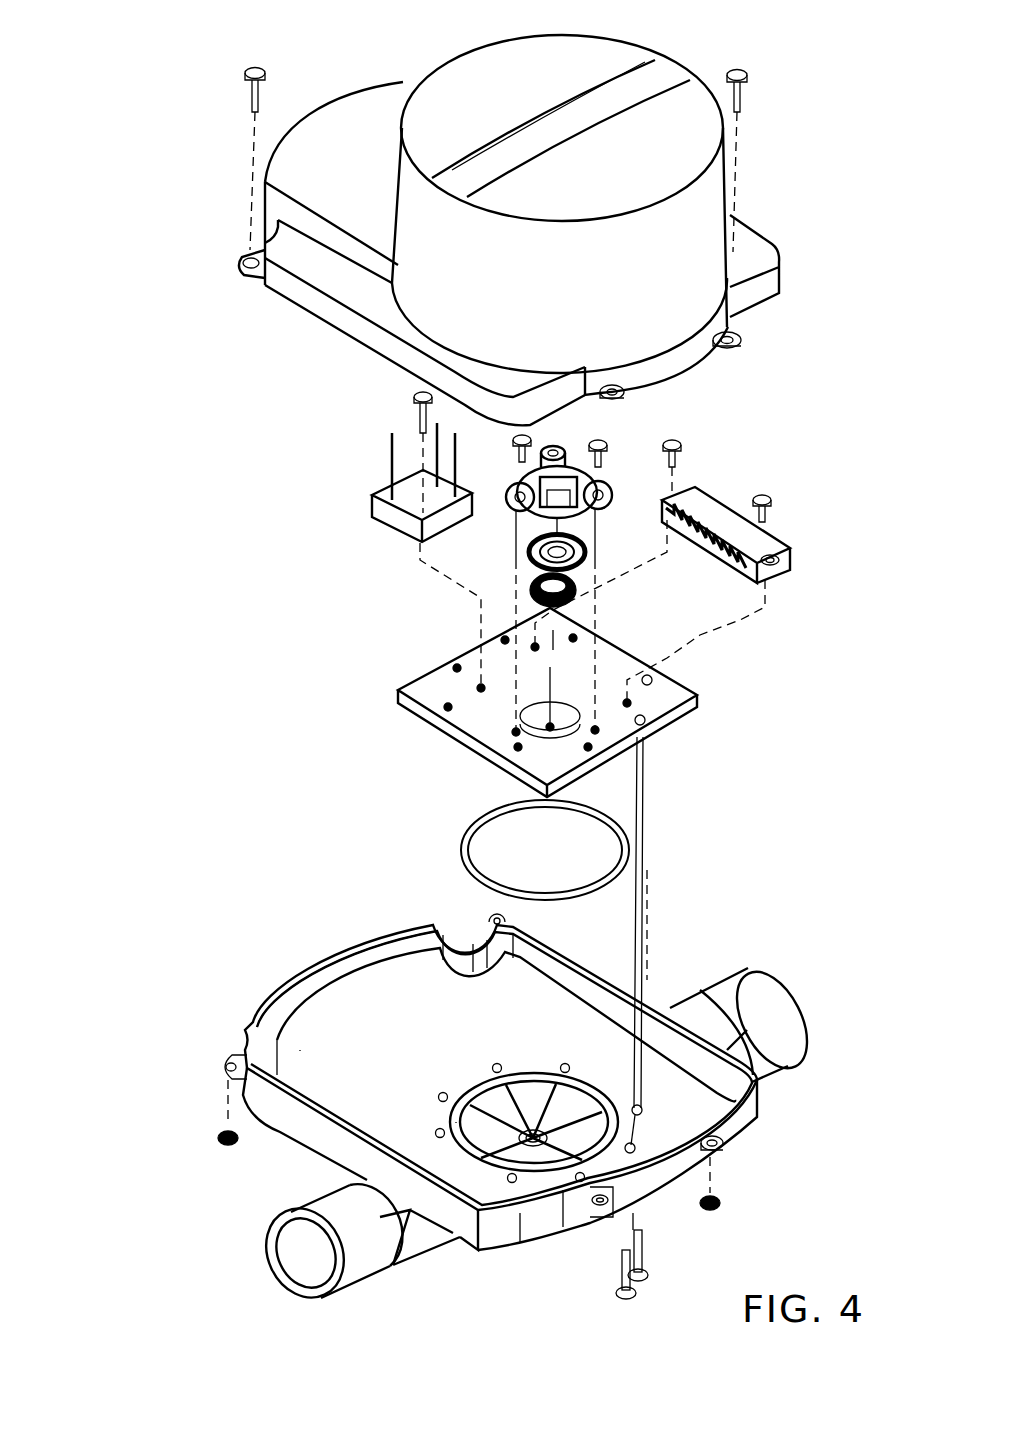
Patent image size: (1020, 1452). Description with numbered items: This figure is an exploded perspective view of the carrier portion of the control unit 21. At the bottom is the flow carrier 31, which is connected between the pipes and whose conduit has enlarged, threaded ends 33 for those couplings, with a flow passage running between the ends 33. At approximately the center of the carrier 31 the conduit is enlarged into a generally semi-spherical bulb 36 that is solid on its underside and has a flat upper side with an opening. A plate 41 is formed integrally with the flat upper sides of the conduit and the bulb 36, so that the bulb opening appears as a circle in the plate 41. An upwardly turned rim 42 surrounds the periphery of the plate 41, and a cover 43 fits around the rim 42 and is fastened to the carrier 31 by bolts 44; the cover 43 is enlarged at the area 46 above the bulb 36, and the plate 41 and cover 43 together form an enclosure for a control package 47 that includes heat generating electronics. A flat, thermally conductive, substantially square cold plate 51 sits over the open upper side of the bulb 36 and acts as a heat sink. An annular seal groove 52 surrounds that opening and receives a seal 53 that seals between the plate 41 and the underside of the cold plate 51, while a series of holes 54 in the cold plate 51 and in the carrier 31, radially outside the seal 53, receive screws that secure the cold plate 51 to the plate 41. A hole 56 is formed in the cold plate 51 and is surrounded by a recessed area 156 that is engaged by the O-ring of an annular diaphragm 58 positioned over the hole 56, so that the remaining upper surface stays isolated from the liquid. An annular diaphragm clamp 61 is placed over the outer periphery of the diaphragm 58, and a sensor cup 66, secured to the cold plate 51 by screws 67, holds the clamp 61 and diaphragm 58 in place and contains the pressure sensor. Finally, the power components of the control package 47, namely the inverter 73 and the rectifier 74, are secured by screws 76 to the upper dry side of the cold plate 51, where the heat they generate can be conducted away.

The control unit 21 is at (320, 558).
The flow carrier 31 is at (700, 927).
The ends 33 is at (790, 1013).
The bulb 36 is at (527, 1093).
The plate 41 is at (365, 1033).
The rim 42 is at (297, 978).
The cover 43 is at (330, 340).
The bolts 44 is at (247, 90).
The enlarged area of cover 46 is at (605, 50).
The control package 47 is at (430, 603).
The cold plate 51 is at (433, 738).
The seal groove 52 is at (473, 1093).
The seal 53 is at (462, 850).
The holes 54 is at (440, 1133).
The hole 56 is at (547, 733).
The annular diaphragm 58 is at (537, 585).
The diaphragm clamp 61 is at (588, 549).
The sensor cup 66 is at (575, 470).
The screws 67 is at (516, 440).
The inverter 73 is at (713, 485).
The rectifier 74 is at (365, 505).
The screws 76 is at (408, 410).
The recessed area 156 is at (565, 727).